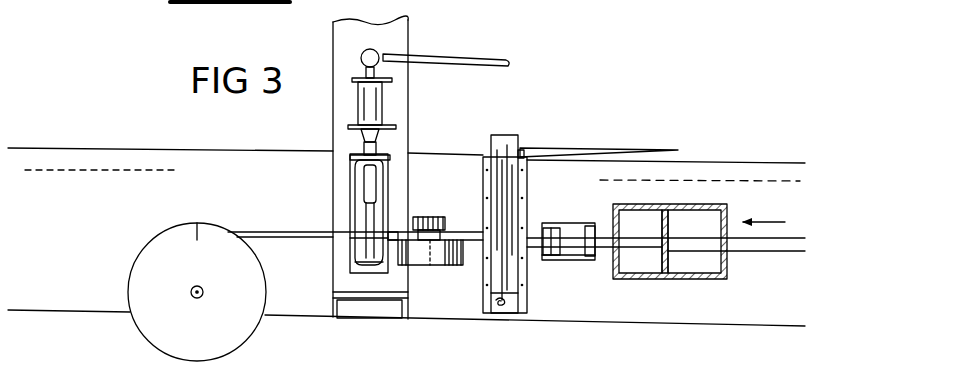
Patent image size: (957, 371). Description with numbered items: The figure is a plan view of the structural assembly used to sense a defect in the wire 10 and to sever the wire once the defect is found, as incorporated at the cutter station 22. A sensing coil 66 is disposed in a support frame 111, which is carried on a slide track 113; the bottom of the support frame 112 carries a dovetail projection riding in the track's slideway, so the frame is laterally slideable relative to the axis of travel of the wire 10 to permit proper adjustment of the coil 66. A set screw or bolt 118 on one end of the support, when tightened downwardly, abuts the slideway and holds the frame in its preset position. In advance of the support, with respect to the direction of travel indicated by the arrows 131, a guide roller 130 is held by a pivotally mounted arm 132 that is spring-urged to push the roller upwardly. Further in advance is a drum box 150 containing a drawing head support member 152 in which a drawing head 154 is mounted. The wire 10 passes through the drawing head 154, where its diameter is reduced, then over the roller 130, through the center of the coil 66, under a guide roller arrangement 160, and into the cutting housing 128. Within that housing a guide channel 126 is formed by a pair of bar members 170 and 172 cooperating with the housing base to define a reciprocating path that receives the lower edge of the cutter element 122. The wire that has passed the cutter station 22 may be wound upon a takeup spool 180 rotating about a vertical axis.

The wire 10 is at (291, 226).
The cutter station 22 is at (284, 169).
The sensing coil 66 is at (550, 220).
The support frame 111 is at (508, 147).
The support frame 112 is at (446, 56).
The slide track 113 is at (529, 303).
The set screw or bolt 118 is at (503, 308).
The cutter element 122 is at (374, 208).
The guide channel 126 is at (355, 264).
The cutting housing 128 is at (352, 212).
The guide roller 130 is at (553, 226).
The arrows 131 is at (775, 208).
The pivotally mounted arm 132 is at (578, 250).
The drum box 150 is at (716, 192).
The drawing head support member 152 is at (673, 279).
The drawing head 154 is at (676, 206).
The guide roller arrangement 160 is at (456, 268).
The bar member 170 is at (352, 247).
The bar member 172 is at (381, 248).
The takeup spool 180 is at (131, 331).